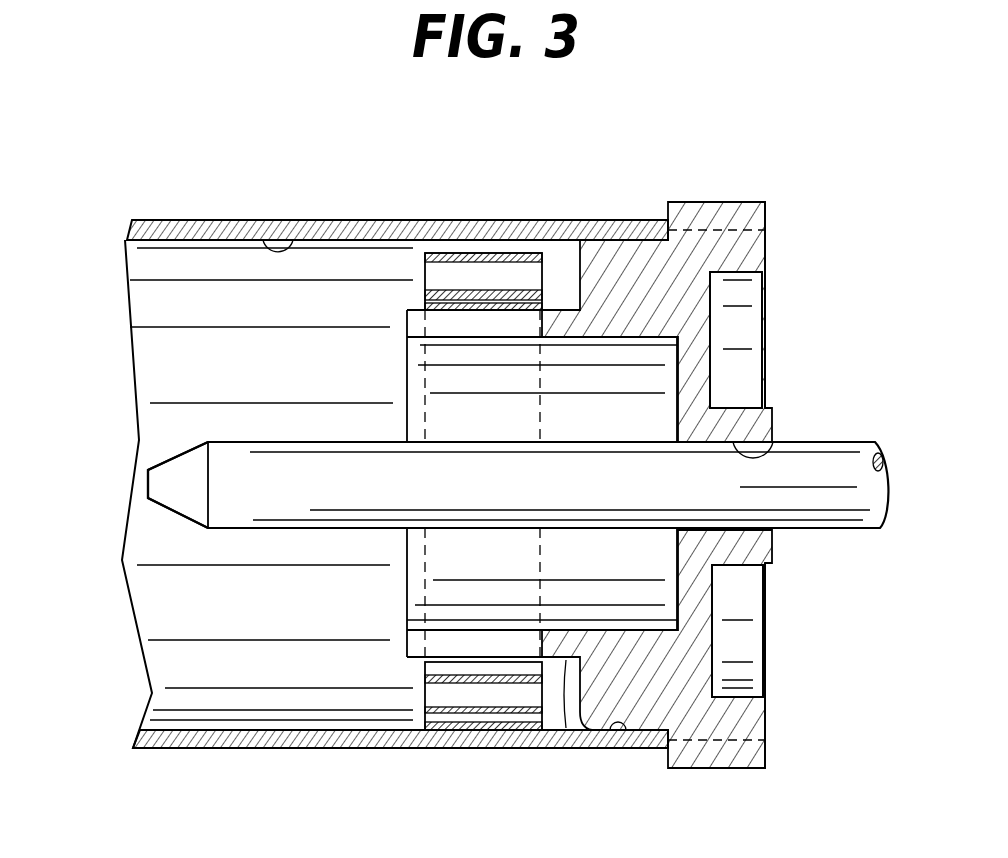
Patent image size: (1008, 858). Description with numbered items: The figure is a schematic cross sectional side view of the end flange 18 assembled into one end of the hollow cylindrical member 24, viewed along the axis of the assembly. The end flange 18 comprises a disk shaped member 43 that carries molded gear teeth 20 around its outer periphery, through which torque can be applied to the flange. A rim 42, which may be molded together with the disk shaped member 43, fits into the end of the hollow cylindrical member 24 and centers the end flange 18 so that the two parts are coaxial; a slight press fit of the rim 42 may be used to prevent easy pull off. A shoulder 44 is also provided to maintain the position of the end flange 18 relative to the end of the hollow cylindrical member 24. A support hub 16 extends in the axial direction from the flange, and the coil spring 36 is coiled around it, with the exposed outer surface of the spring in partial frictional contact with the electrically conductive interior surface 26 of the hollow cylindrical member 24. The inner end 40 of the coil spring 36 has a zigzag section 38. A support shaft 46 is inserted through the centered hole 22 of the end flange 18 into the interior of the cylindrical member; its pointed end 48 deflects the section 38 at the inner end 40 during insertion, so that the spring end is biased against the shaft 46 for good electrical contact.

The support hub 16 is at (568, 737).
The end flange 18 is at (797, 331).
The gear teeth 20 is at (725, 200).
The hole 22 is at (793, 445).
The hollow cylindrical member 24 is at (313, 752).
The interior surface 26 is at (253, 240).
The coil spring 36 is at (483, 253).
The section 38 is at (407, 403).
The inner end 40 is at (455, 647).
The rim 42 is at (637, 752).
The disk shaped member 43 is at (712, 617).
The shoulder 44 is at (668, 212).
The support shaft 46 is at (825, 535).
The pointed end 48 is at (177, 513).